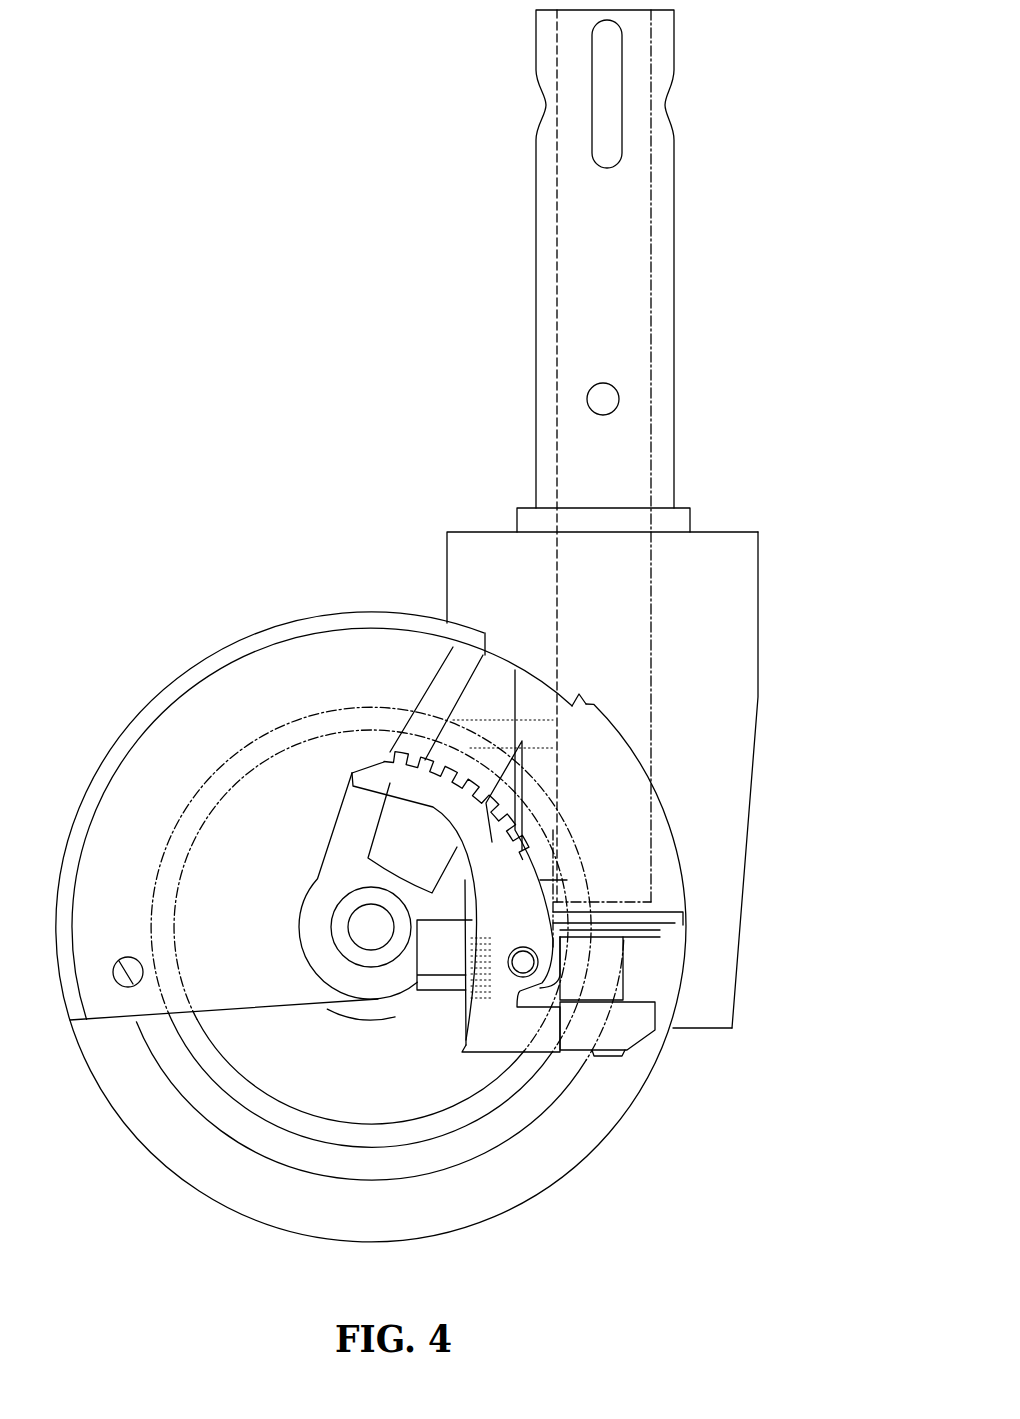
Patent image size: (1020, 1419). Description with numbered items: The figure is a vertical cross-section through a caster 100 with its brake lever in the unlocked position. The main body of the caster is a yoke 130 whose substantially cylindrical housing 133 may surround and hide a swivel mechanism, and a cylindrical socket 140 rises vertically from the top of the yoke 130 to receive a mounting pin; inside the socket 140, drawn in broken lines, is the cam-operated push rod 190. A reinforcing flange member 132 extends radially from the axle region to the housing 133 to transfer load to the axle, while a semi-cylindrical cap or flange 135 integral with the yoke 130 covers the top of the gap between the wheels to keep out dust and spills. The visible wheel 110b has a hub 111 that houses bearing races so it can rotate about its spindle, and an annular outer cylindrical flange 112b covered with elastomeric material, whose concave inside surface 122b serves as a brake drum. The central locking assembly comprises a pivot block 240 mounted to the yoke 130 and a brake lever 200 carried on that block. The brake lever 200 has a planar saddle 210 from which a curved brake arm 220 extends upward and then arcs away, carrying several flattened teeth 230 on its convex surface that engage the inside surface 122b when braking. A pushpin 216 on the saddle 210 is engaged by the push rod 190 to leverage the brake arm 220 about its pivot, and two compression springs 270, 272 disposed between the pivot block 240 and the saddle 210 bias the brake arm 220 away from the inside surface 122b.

The caster 100 is at (203, 314).
The wheel 110b is at (410, 1220).
The hub 111 is at (330, 1011).
The annular outer cylindrical flange 112b is at (555, 1150).
The inside surface 122b is at (352, 1122).
The yoke 130 is at (718, 707).
The flange member 132 is at (352, 845).
The cylindrical housing 133 is at (758, 593).
The semi-cylindrical cap or flange 135 is at (120, 738).
The cylindrical socket 140 is at (536, 322).
The push rod 190 is at (559, 193).
The brake lever 200 is at (531, 927).
The saddle 210 is at (632, 1022).
The pushpin 216 is at (623, 970).
The brake arm 220 is at (427, 790).
The flattened teeth 230 is at (474, 800).
The pivot block 240 is at (466, 952).
The compression spring 270 is at (429, 1004).
The compression spring 272 is at (470, 1002).